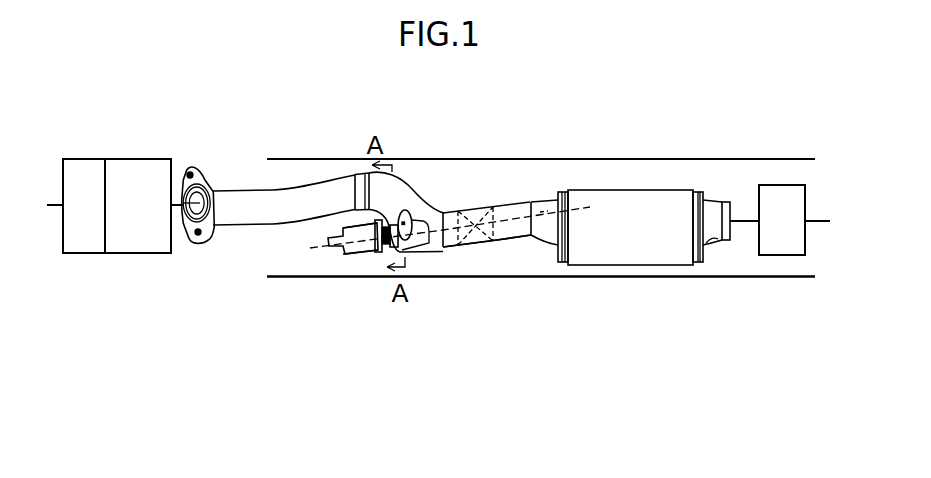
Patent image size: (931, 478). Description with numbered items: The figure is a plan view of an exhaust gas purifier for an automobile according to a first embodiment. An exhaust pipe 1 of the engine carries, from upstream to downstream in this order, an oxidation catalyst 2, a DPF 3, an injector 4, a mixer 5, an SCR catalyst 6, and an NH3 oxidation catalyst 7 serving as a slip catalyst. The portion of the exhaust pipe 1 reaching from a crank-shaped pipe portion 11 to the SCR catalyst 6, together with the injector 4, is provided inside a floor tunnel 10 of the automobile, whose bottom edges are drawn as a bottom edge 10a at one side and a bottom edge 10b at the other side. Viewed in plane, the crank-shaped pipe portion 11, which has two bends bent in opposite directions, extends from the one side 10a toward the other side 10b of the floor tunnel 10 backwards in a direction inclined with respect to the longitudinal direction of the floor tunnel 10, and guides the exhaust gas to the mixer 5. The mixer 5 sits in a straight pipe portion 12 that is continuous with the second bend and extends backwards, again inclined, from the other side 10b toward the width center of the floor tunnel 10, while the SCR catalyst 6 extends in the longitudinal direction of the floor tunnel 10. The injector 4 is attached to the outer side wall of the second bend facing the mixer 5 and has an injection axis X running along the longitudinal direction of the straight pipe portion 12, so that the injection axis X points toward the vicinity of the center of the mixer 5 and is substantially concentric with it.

The exhaust pipe 1 is at (316, 180).
The oxidation catalyst 2 is at (82, 158).
The DPF 3 is at (138, 158).
The injector 4 is at (356, 257).
The mixer 5 is at (500, 212).
The SCR catalyst 6 is at (641, 190).
The NH3 oxidation catalyst 7 is at (783, 186).
The floor tunnel 10 is at (709, 158).
The bottom edge at one side of the floor tunnel 10a is at (582, 158).
The bottom edge at other side of the floor tunnel 10b is at (578, 277).
The crank-shaped pipe portion 11 is at (407, 190).
The straight pipe portion 12 is at (508, 242).
The injection axis X is at (540, 212).